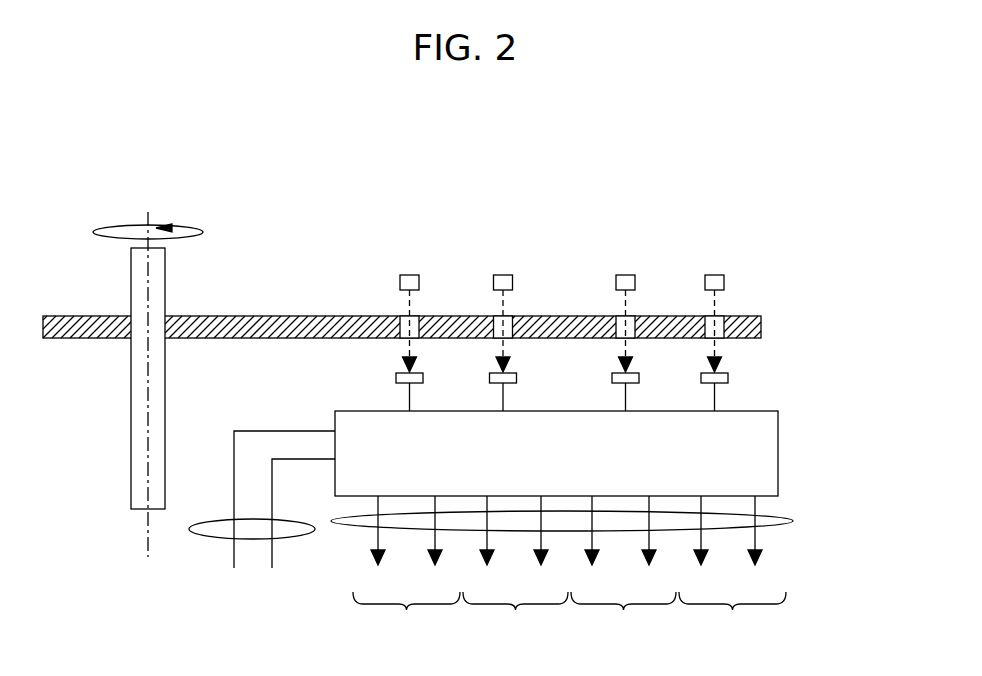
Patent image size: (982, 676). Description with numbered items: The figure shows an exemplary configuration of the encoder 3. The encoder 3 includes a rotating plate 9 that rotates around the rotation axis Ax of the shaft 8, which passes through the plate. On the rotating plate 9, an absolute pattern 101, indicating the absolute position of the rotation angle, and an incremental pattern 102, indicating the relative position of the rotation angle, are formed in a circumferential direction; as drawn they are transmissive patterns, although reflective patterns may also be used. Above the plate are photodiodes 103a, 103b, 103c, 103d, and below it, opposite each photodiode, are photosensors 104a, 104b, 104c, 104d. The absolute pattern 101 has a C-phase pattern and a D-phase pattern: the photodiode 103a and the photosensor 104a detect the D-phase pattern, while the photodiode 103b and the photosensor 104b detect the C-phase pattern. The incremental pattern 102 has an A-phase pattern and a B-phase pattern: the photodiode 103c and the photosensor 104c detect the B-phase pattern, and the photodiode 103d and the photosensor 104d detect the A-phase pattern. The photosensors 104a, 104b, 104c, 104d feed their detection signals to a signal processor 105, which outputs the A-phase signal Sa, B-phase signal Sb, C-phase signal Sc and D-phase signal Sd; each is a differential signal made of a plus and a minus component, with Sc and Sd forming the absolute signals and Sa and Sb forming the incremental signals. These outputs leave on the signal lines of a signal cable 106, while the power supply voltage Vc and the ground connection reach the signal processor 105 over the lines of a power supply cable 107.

The encoder 3 is at (822, 268).
The shaft 8 is at (165, 394).
The rotating plate 9 is at (297, 316).
The absolute pattern 101 is at (464, 295).
The incremental pattern 102 is at (679, 295).
The photodiode 103a is at (410, 274).
The photodiode 103b is at (503, 274).
The photodiode 103c is at (626, 274).
The photodiode 103d is at (714, 274).
The photosensor 104a is at (423, 377).
The photosensor 104b is at (516, 377).
The photosensor 104c is at (639, 377).
The photosensor 104d is at (728, 377).
The signal processor 105 is at (778, 433).
The signal cable 106 is at (790, 515).
The power supply cable 107 is at (290, 540).